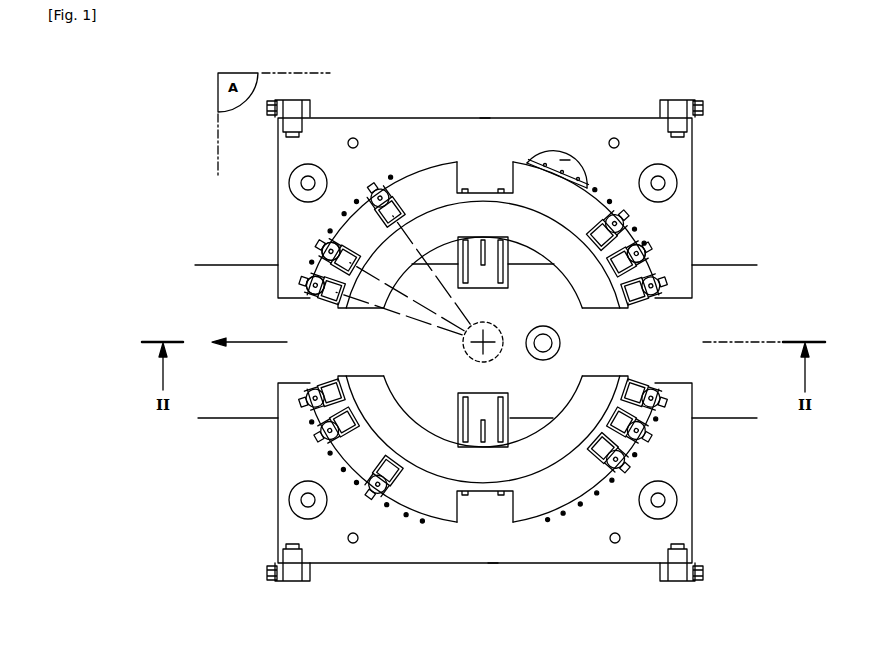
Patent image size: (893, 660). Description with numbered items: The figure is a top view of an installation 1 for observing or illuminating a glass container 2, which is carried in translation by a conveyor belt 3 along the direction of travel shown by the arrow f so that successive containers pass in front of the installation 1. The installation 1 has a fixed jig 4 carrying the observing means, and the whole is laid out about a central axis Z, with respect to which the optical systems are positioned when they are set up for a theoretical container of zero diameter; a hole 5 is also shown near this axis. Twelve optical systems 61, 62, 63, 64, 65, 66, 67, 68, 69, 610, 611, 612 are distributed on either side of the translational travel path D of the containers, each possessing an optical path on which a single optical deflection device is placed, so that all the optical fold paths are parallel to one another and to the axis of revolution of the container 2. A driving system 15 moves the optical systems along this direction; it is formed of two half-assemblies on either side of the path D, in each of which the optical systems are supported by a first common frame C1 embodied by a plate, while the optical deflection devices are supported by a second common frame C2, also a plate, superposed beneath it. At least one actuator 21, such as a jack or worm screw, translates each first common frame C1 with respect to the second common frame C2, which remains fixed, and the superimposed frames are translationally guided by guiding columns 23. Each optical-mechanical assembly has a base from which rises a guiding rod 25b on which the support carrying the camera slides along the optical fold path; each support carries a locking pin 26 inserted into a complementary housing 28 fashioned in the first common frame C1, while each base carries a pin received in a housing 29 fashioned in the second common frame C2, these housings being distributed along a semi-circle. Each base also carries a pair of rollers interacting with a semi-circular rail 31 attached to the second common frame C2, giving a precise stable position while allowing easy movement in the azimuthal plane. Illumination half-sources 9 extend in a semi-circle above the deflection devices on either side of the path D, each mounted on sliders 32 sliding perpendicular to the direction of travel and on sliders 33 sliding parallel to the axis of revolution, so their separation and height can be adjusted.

The installation 1 is at (192, 198).
The glass container 2 is at (532, 353).
The conveyor belt 3 is at (262, 416).
The jig 4 is at (262, 576).
The bore 5 is at (545, 339).
The illumination half-source 9 is at (388, 397).
The driving system 15 is at (700, 158).
The actuator 21 is at (305, 183).
The guiding column 23 is at (353, 138).
The guiding rod 25b is at (314, 297).
The locking pin 26 is at (323, 251).
The housing 28 is at (410, 168).
The housing 29 is at (580, 183).
The semi-circular rail 31 is at (558, 173).
The slider 32 is at (505, 268).
The slider 33 is at (475, 185).
The optical system 61 is at (345, 298).
The optical system 62 is at (352, 262).
The optical system 63 is at (398, 208).
The optical system 64 is at (597, 236).
The optical system 65 is at (615, 265).
The optical system 66 is at (618, 303).
The optical system 67 is at (628, 388).
The optical system 68 is at (610, 414).
The optical system 69 is at (593, 449).
The optical system 610 is at (398, 468).
The optical system 611 is at (357, 424).
The optical system 612 is at (340, 393).
The first common frame C1 is at (487, 119).
The second common frame C2 is at (565, 158).
The central axis Z is at (488, 333).
The direction of travel f is at (249, 334).
The translational travel path D is at (668, 352).